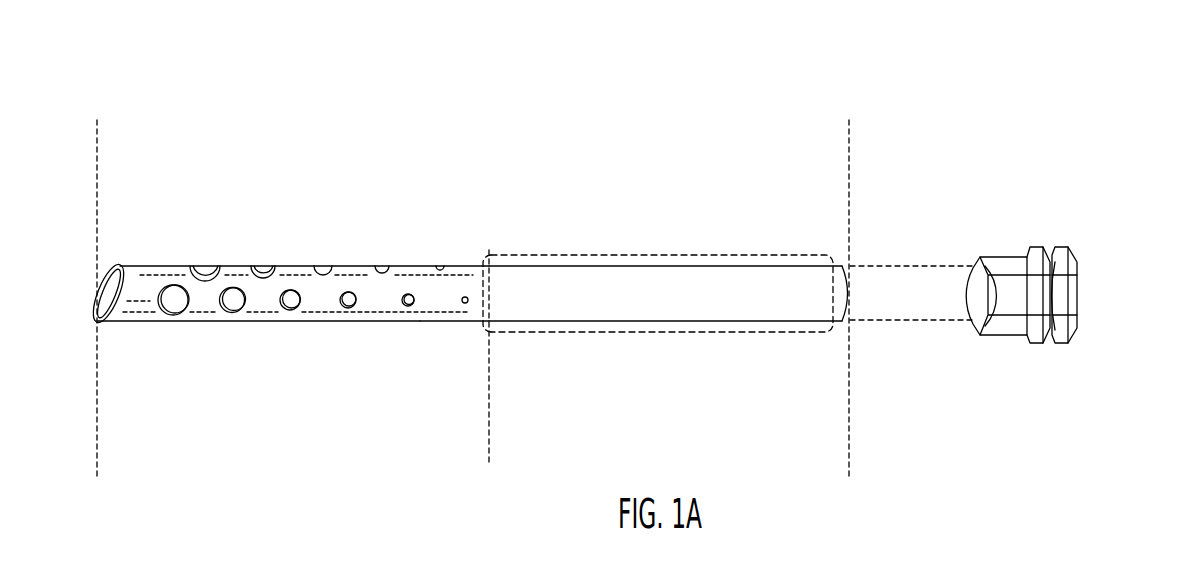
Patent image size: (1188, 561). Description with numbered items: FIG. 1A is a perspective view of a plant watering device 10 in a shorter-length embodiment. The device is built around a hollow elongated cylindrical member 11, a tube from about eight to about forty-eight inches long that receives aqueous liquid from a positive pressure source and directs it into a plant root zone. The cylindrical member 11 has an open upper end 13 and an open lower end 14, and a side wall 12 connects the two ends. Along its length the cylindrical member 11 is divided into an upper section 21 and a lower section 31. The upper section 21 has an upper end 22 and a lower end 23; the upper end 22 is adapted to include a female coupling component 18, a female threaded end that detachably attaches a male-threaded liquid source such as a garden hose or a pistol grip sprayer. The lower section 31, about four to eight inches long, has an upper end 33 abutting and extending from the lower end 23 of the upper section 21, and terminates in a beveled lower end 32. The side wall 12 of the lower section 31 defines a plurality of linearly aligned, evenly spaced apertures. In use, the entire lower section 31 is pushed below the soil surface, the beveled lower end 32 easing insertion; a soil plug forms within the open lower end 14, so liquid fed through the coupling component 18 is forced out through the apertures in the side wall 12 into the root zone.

The plant watering device 10 is at (970, 63).
The hollow elongated cylindrical member 11 is at (848, 138).
The side wall 12 is at (327, 298).
The open upper end 13 is at (860, 306).
The open lower end 14 is at (90, 278).
The beveled lower end 32 is at (109, 293).
The female coupling component 18 is at (998, 262).
The upper section 21 is at (848, 420).
The upper end of upper section 22 is at (793, 350).
The lower end of upper section 23 is at (509, 358).
The lower section 31 is at (489, 420).
The upper end of lower section 33 is at (436, 345).